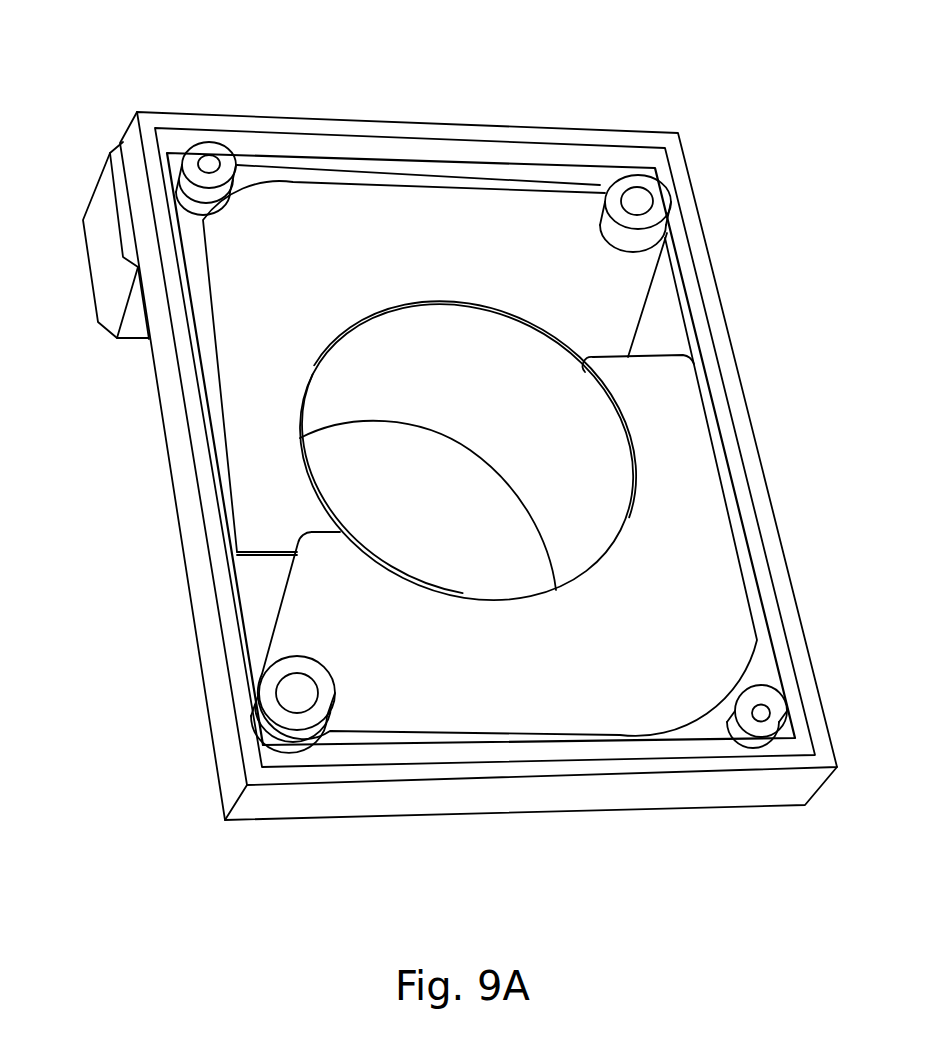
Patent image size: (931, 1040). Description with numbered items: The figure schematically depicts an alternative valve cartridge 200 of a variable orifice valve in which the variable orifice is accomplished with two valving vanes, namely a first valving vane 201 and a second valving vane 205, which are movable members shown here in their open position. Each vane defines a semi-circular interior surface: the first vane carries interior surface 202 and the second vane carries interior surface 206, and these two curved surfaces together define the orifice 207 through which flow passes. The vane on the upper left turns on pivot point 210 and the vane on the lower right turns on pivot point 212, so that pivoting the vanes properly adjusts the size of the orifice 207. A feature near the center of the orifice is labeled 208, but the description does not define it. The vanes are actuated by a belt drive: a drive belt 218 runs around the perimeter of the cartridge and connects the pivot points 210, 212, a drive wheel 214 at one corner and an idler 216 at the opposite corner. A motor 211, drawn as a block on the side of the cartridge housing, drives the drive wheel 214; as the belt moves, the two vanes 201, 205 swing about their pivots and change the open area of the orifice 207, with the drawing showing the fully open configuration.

The valve cartridge 200 is at (724, 86).
The valving vane 201 is at (357, 270).
The semi-circular interior surface 202 is at (437, 303).
The valving vane 205 is at (516, 680).
The semi-circular interior surface 206 is at (533, 602).
The orifice 207 is at (461, 540).
The lens surface 208 is at (423, 383).
The pivot point 210 is at (661, 205).
The motor 211 is at (107, 273).
The pivot point 212 is at (273, 715).
The drive wheel 214 is at (197, 155).
The idler 216 is at (777, 715).
The drive belt 218 is at (441, 159).